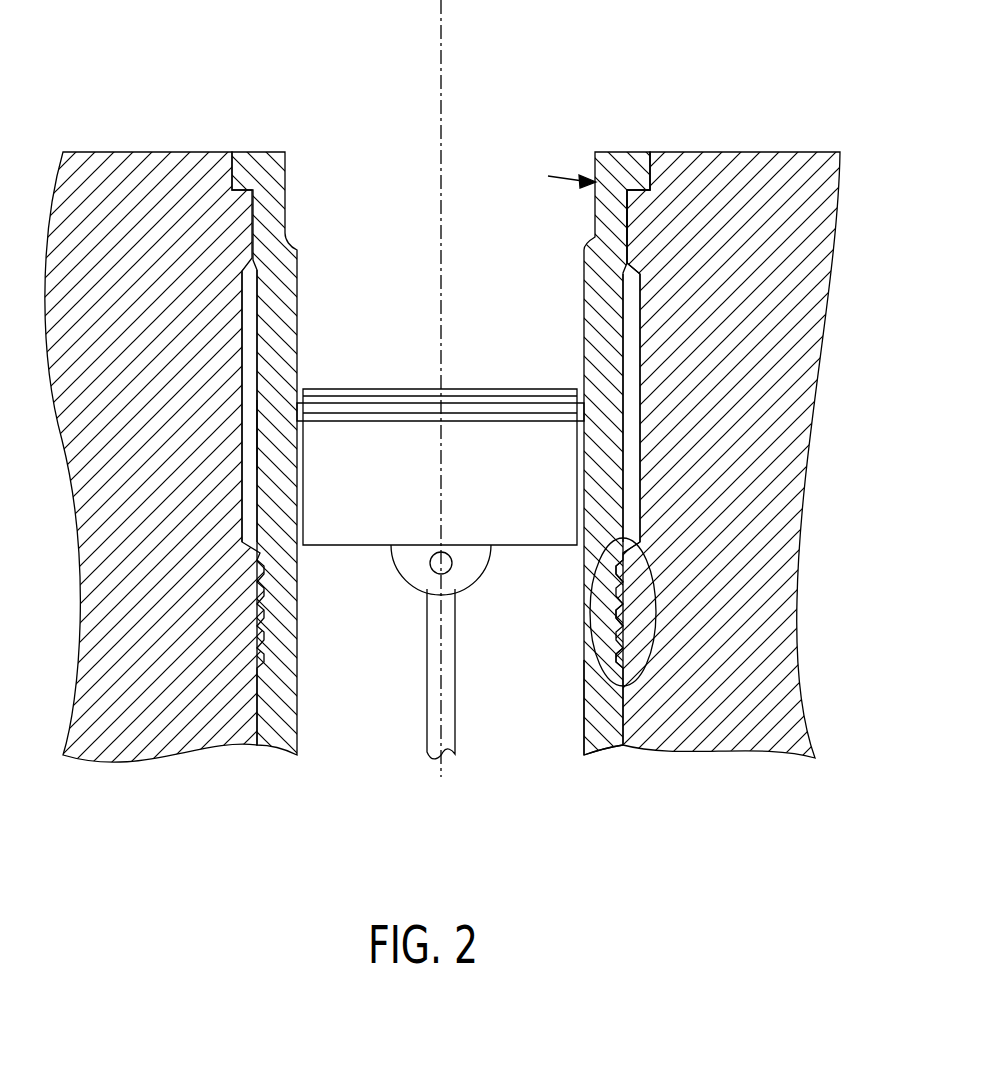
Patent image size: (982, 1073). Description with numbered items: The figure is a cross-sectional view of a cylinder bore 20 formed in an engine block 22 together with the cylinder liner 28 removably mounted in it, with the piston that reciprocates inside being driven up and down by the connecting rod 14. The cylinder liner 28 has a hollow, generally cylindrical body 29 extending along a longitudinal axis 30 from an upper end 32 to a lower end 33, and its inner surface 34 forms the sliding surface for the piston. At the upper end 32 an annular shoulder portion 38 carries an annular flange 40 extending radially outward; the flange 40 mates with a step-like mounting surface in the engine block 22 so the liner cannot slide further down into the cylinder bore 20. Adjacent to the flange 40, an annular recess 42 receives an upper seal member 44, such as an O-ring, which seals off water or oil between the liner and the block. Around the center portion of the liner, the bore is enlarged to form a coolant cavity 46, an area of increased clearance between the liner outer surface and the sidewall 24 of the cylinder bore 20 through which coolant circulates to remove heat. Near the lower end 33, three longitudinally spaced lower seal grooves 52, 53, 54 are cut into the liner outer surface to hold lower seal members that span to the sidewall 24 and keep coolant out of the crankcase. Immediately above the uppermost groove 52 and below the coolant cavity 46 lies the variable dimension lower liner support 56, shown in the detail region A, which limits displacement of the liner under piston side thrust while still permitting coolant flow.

The connecting rod 14 is at (427, 690).
The cylinder bore 20 is at (243, 330).
The engine block 22 is at (800, 152).
The sidewall 24 is at (262, 432).
The cylinder liner 28 is at (606, 152).
The cylindrical body 29 is at (282, 696).
The longitudinal axis 30 is at (450, 48).
The upper end 32 is at (249, 151).
The lower end 33 is at (597, 755).
The inner surface 34 is at (584, 692).
The annular shoulder portion 38 is at (552, 166).
The annular flange 40 is at (633, 170).
The annular recess 42 is at (627, 202).
The upper seal member 44 is at (627, 218).
The coolant cavity 46 is at (630, 372).
The lower seal groove 52 is at (623, 572).
The lower seal groove 53 is at (612, 610).
The lower seal groove 54 is at (623, 660).
The variable dimension lower liner support 56 is at (641, 530).
The detail area A is at (588, 617).